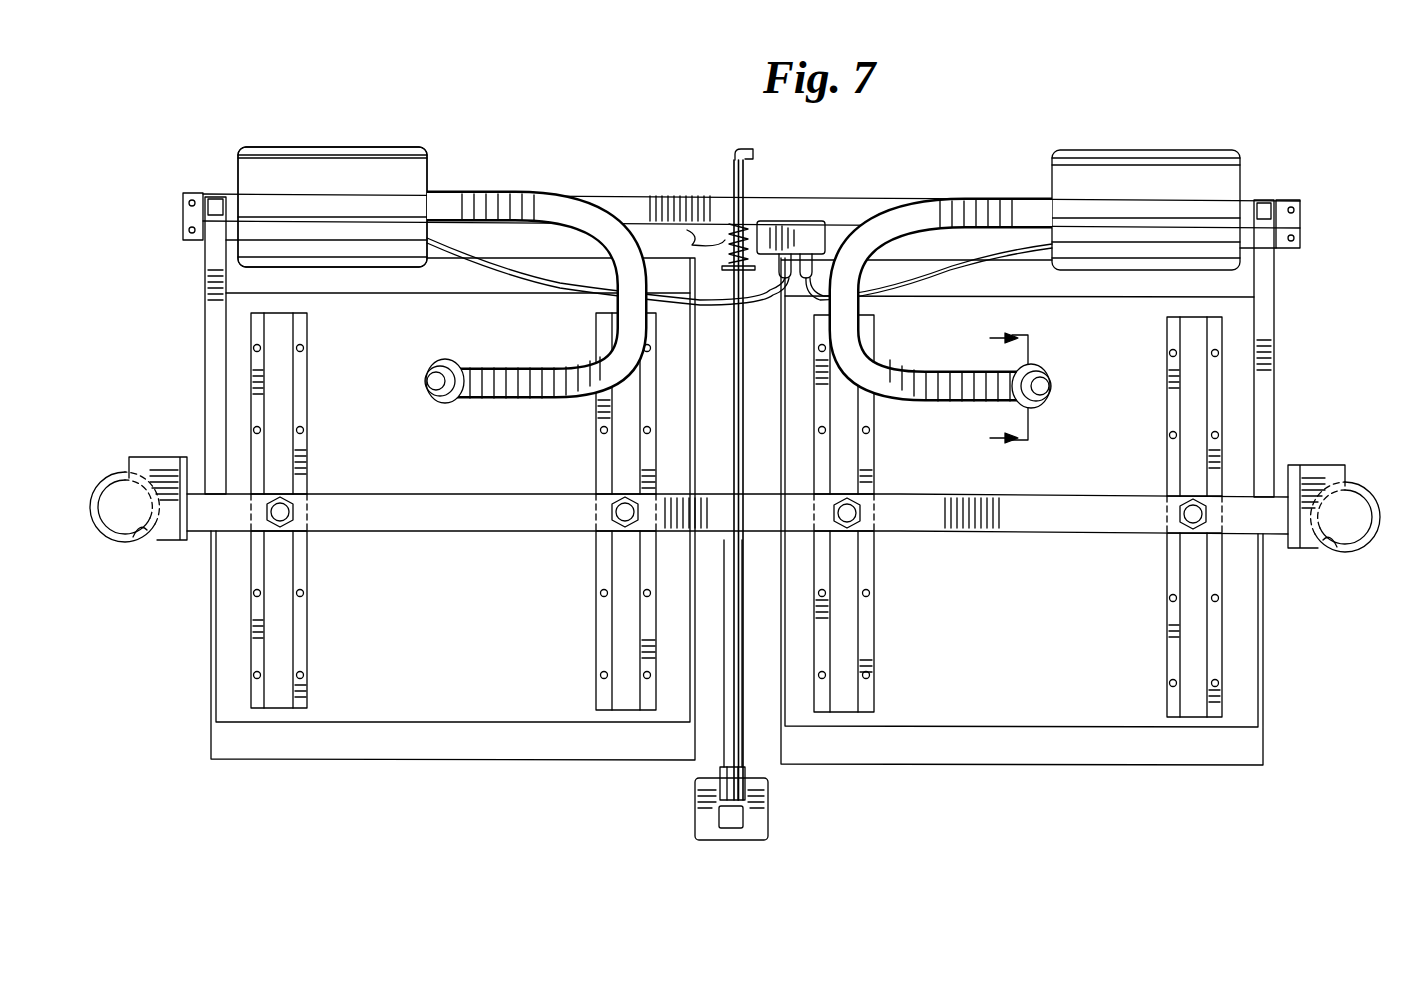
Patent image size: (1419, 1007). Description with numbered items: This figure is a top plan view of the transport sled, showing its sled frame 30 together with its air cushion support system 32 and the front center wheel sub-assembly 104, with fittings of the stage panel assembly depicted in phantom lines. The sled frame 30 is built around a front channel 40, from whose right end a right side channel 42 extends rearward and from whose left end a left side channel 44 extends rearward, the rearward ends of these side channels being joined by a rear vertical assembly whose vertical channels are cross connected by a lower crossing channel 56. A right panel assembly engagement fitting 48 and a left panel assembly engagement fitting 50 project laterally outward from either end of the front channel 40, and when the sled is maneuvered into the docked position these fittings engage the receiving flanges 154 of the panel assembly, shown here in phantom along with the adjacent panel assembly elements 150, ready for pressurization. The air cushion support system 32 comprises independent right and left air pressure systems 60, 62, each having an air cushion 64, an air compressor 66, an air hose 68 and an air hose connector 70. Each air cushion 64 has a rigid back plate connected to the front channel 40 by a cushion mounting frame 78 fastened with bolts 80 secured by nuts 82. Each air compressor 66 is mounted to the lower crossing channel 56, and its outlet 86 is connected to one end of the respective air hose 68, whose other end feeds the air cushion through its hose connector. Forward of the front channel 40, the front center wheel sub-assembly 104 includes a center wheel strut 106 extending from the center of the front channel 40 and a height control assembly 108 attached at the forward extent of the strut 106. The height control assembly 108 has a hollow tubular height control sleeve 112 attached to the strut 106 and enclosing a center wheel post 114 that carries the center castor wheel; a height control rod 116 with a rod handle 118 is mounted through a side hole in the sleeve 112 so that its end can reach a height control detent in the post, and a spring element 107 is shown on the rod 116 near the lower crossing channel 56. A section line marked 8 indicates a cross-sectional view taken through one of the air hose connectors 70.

The section line 8- 8 is at (1000, 389).
The sled frame 30 is at (1018, 495).
The air cushion support system 32 is at (375, 140).
The front channel 40 is at (985, 535).
The right side channel 42 is at (205, 368).
The left side channel 44 is at (1274, 385).
The right panel assembly engagement fitting 48 is at (176, 457).
The left panel assembly engagement fitting 50 is at (1320, 465).
The lower crossing channel 56 is at (718, 195).
The right air pressure system 60 is at (300, 130).
The left air pressure system 62 is at (1234, 145).
The air cushion 64 is at (436, 762).
The air compressor 66 is at (447, 150).
The air hose 68 is at (540, 194).
The air hose connector 70 is at (440, 360).
The cushion mounting frame 78 is at (312, 458).
The bolt 80 is at (292, 528).
The nut 82 is at (280, 512).
The outlet 86 is at (465, 193).
The front center wheel sub-assembly 104 is at (716, 701).
The center wheel strut 106 is at (744, 712).
The spring 107 is at (720, 262).
The height control assembly 108 is at (746, 792).
The height control sleeve 112 is at (756, 830).
The center wheel post 114 is at (719, 812).
The height control rod 116 is at (772, 412).
The rod handle 118 is at (745, 150).
The inner ring 150 is at (177, 538).
The receiving flange 154 is at (100, 542).